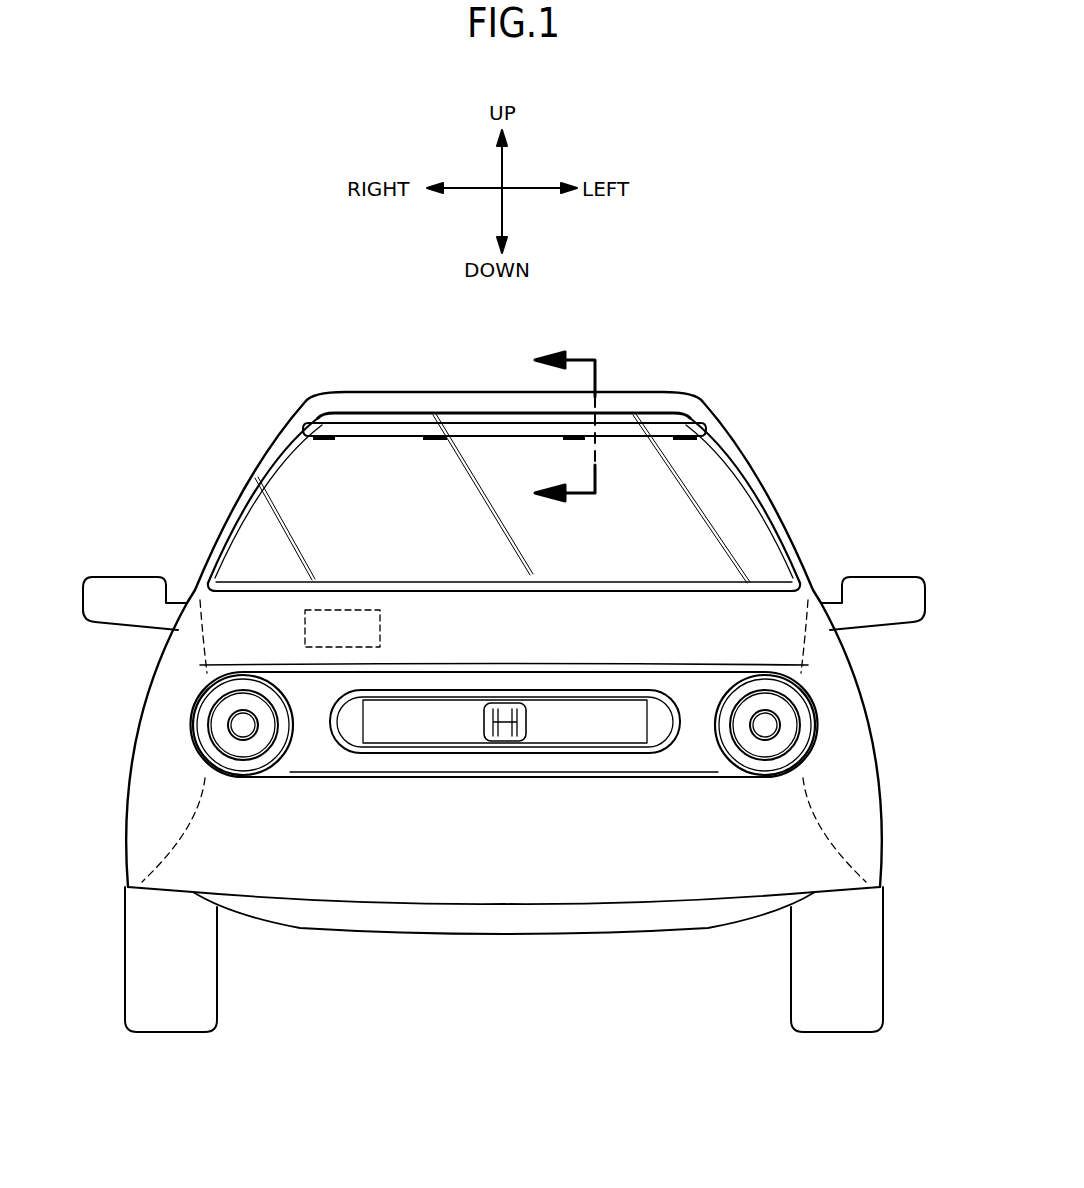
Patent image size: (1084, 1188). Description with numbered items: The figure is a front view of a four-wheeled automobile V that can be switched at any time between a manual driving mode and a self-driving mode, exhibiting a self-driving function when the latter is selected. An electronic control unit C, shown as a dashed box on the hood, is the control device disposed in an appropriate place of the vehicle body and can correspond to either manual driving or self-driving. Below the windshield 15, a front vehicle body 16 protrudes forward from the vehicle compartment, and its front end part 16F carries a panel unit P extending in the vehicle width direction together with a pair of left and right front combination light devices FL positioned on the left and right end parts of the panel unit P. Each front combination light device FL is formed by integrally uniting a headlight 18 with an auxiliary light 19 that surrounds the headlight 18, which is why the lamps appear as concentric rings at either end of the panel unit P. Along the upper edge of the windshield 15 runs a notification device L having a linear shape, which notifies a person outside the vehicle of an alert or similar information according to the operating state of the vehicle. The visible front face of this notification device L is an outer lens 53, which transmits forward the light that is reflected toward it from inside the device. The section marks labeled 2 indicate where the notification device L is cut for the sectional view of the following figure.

The four-wheeled automobile V is at (333, 366).
The windshield 15 is at (468, 517).
The outer lens 53 is at (468, 421).
The section line of FIG. 2 is at (583, 424).
The notification device L is at (637, 440).
The front vehicle body 16 is at (672, 600).
The front end part 16F is at (520, 840).
The electronic control unit C is at (345, 610).
The panel unit P is at (605, 789).
The headlight 18 is at (243, 723).
The auxiliary light 19 is at (212, 752).
The front combination light device FL is at (90, 655).